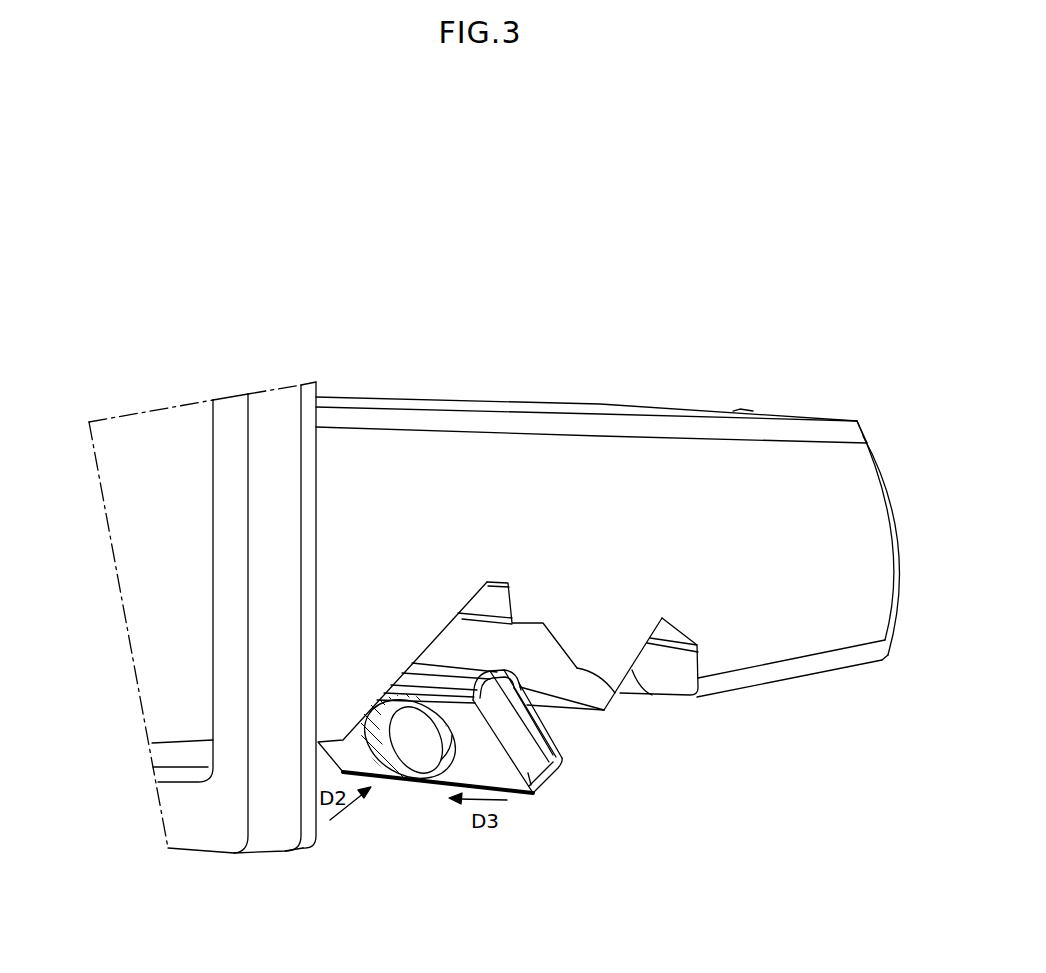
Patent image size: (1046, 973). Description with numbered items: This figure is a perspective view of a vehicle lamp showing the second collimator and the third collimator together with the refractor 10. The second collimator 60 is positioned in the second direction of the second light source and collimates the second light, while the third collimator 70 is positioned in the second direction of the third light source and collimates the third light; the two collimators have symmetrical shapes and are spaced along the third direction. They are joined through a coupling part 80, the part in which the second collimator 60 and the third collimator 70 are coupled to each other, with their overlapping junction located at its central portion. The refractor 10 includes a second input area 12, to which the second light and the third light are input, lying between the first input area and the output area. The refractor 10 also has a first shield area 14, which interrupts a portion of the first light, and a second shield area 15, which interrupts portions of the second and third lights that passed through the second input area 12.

The refractor 10 is at (620, 427).
The second input area 12 is at (616, 700).
The first shield area 14 is at (428, 632).
The second shield area 15 is at (653, 697).
The second collimator 60 is at (423, 748).
The third collimator 70 is at (388, 767).
The coupling part 80 is at (530, 793).